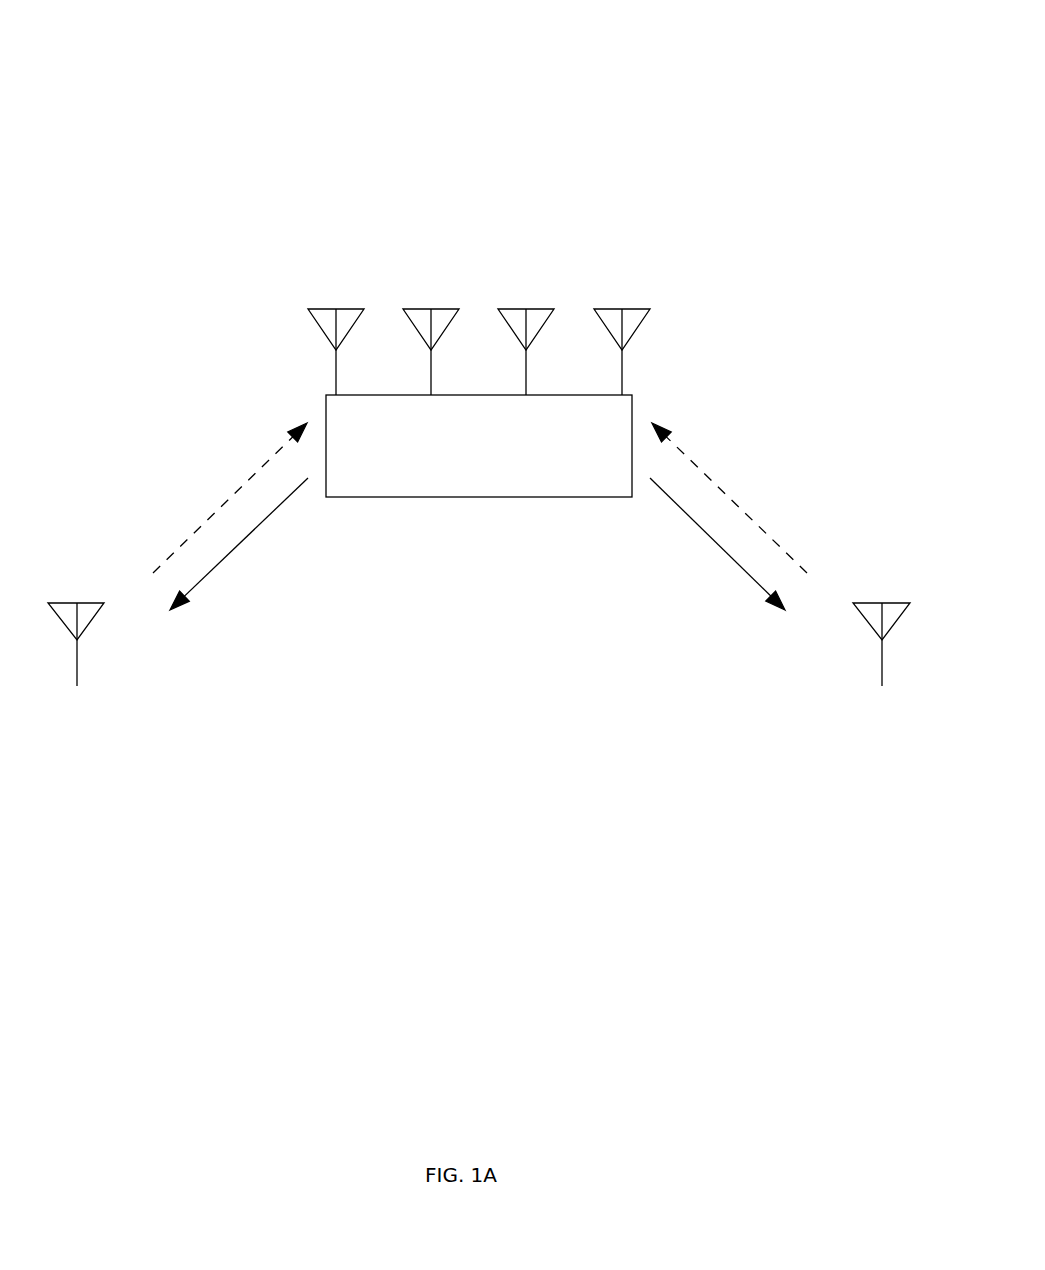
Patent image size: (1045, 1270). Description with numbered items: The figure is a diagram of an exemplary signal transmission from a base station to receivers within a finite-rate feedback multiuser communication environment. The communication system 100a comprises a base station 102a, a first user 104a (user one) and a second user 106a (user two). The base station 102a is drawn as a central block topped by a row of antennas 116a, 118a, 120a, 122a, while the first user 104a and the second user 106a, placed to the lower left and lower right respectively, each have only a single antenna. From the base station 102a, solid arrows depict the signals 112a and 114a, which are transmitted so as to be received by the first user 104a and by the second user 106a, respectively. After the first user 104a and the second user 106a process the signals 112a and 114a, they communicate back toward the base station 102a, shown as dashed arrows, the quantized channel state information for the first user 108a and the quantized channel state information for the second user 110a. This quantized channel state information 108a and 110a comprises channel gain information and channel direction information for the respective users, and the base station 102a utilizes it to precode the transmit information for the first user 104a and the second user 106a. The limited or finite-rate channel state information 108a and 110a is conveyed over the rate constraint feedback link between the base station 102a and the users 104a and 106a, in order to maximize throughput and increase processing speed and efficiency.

The communication system 100a is at (207, 99).
The base station 102a is at (458, 497).
The first user 104a is at (172, 662).
The second user 106a is at (795, 662).
The quantized channel state information ĥ1 108a is at (182, 493).
The quantized channel state information ĥ2 110a is at (763, 460).
The signal 112a is at (248, 532).
The signal 114a is at (705, 533).
The antenna 116a is at (328, 309).
The antenna 118a is at (427, 309).
The antenna 120a is at (527, 309).
The antenna 122a is at (622, 309).